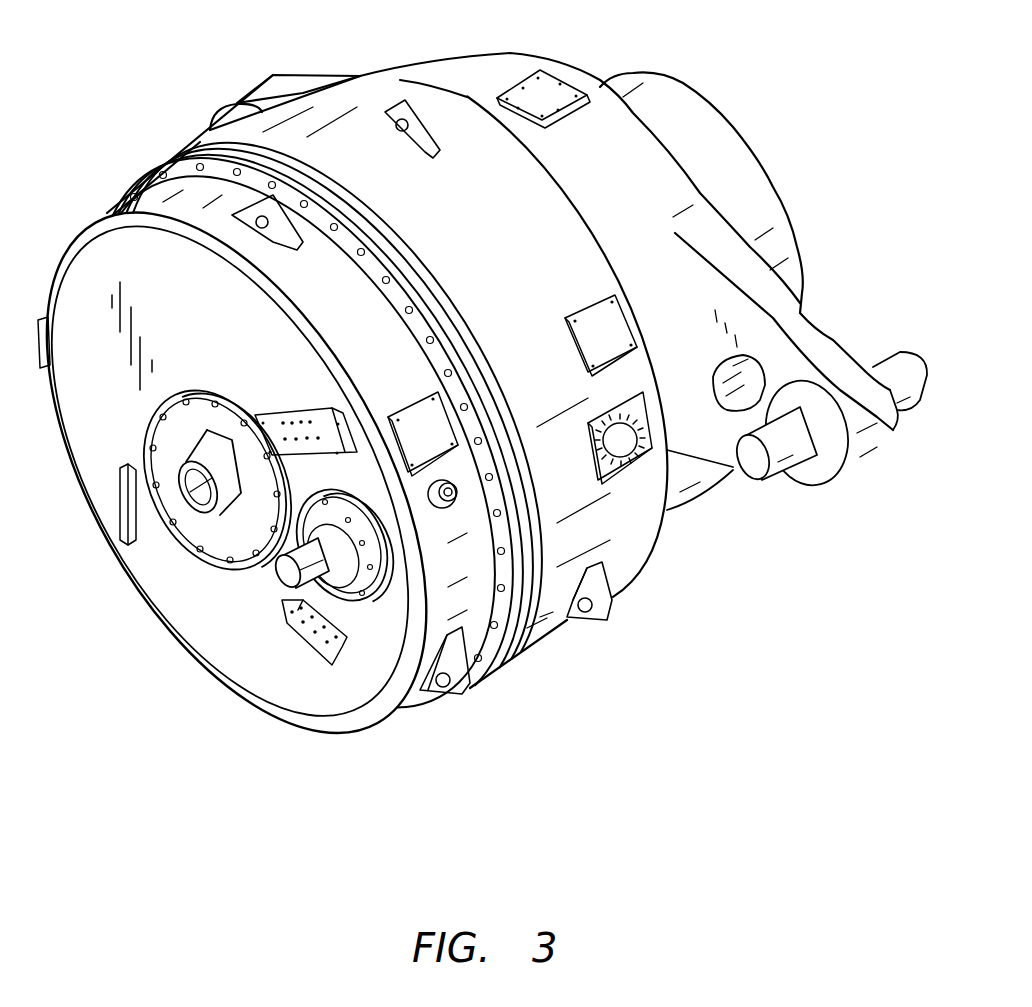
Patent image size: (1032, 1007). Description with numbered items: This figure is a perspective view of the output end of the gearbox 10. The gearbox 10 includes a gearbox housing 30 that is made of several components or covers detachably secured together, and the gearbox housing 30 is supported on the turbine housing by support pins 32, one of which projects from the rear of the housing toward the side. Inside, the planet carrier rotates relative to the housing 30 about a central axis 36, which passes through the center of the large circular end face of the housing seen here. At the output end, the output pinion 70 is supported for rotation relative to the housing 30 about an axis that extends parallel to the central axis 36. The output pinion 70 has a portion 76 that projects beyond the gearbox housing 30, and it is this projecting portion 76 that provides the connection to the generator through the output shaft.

The gearbox 10 is at (463, 429).
The gearbox housing 30 is at (457, 56).
The support pins 32 is at (782, 456).
The central axis 36 is at (158, 510).
The output pinion 70 is at (280, 580).
The portion of the output pinion 76 is at (264, 610).